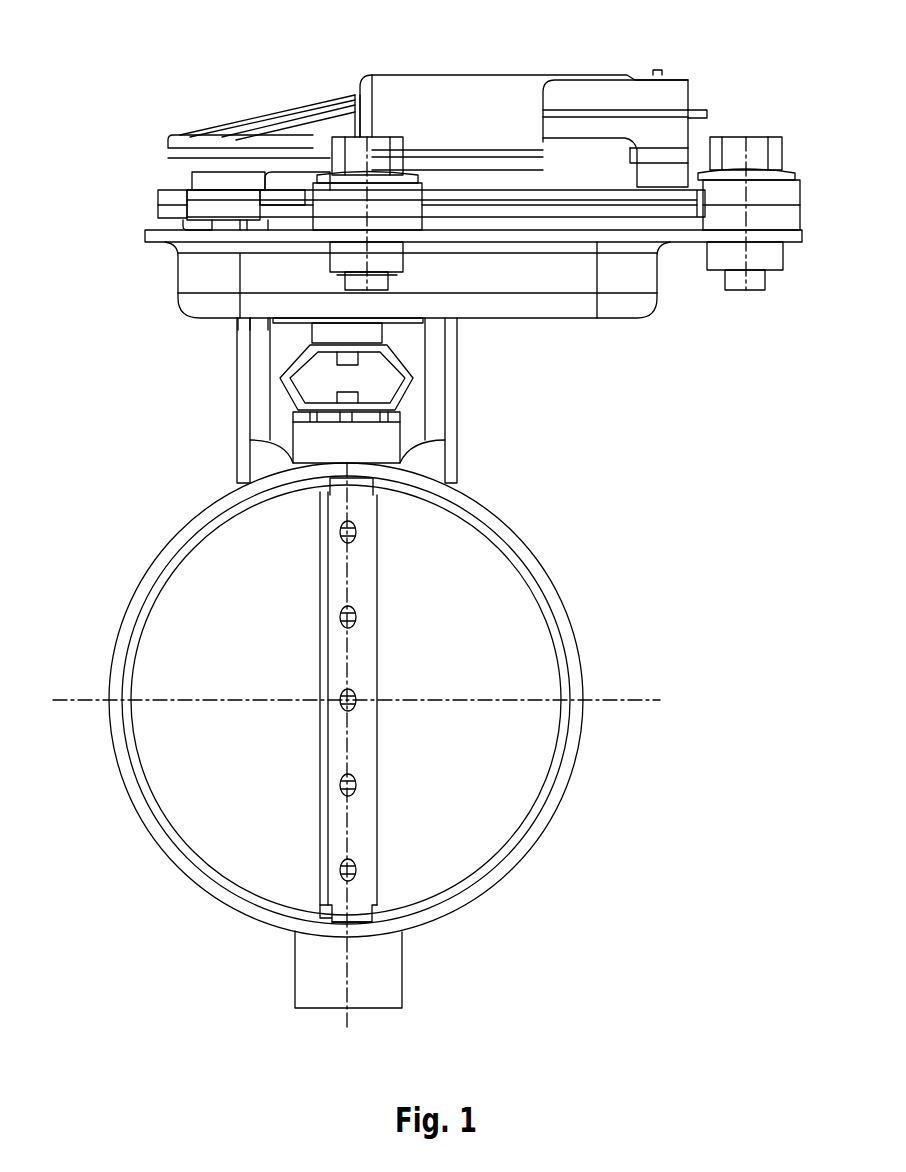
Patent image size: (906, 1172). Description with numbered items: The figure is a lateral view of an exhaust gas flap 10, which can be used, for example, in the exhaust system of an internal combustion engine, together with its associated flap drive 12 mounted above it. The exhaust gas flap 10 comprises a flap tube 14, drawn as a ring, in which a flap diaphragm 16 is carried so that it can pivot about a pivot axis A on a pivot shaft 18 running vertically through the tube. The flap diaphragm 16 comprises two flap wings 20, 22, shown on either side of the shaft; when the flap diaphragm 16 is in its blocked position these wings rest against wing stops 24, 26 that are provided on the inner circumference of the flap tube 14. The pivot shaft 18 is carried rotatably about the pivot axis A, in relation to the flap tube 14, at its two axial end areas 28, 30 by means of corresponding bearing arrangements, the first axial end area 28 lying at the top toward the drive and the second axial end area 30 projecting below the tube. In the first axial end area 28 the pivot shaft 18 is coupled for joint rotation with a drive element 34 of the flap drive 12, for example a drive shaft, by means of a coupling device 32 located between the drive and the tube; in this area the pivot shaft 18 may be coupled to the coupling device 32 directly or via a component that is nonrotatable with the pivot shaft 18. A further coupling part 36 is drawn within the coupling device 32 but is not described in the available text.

The exhaust gas flap 10 is at (651, 940).
The flap drive 12 is at (399, 74).
The flap tube 14 is at (563, 600).
The flap diaphragm 16 is at (240, 835).
The pivot shaft 18 is at (355, 915).
The flap wing 20 is at (177, 748).
The flap wing 22 is at (518, 772).
The wing stop 24 is at (562, 668).
The wing stop 26 is at (163, 572).
The first axial end area 28 is at (377, 445).
The second axial end area 30 is at (328, 972).
The coupling device 32 is at (218, 392).
The drive element 34 is at (372, 334).
The hexagonal coupling 36 is at (292, 353).
The pivot axis A is at (352, 568).